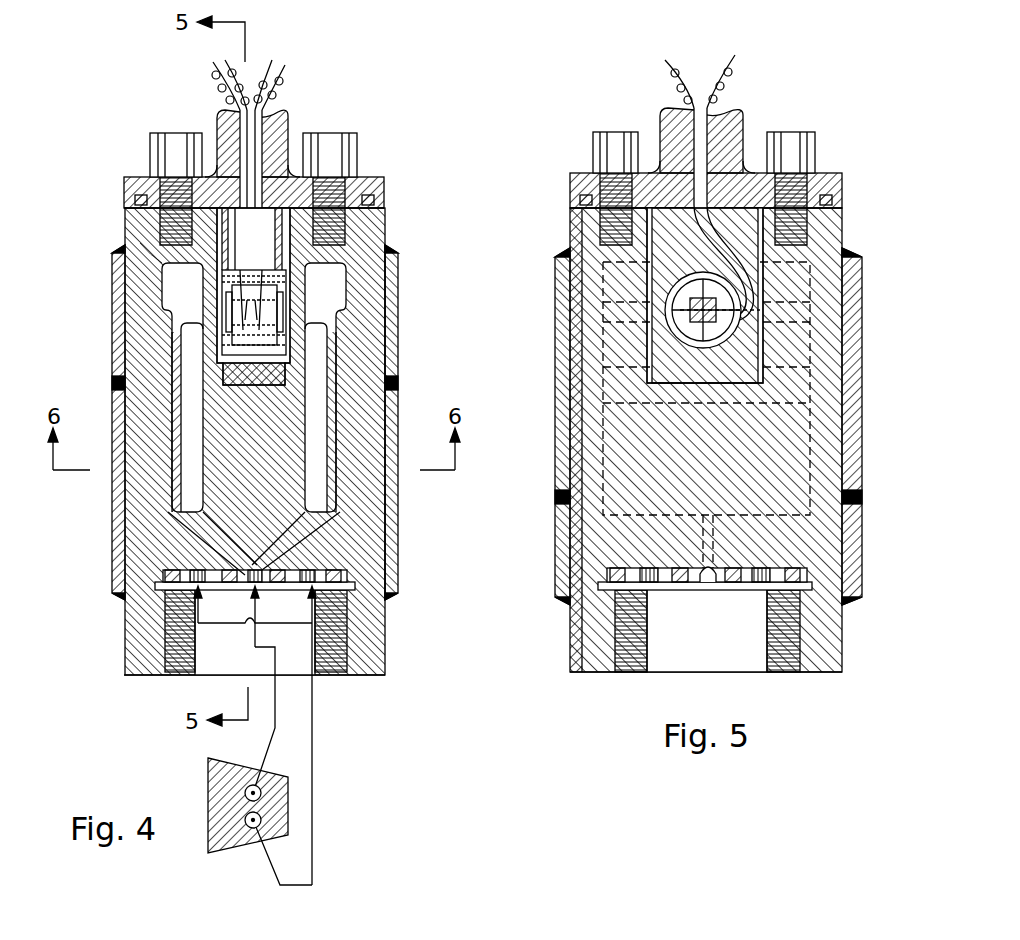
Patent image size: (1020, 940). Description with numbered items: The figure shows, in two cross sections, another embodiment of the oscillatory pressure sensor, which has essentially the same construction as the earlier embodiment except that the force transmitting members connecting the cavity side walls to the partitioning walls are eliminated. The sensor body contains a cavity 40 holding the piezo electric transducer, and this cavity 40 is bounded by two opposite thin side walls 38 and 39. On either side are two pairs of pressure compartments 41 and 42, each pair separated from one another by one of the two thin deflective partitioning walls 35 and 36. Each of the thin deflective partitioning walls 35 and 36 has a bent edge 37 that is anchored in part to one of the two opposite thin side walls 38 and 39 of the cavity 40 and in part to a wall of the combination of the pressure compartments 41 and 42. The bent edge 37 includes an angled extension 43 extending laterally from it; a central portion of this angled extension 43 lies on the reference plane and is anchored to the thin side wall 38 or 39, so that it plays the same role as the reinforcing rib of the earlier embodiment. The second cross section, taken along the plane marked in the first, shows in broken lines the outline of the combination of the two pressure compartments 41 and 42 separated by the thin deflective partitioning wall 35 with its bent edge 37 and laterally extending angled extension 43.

In FIG. 4, the thin deflective partitioning wall 35 is at (170, 463).
In FIG. 5, the thin deflective partitioning wall 35 is at (560, 384).
In FIG. 4, the thin deflective partitioning wall 36 is at (350, 480).
In FIG. 4, the bent edge 37 is at (140, 243).
In FIG. 5, the bent edge 37 is at (835, 335).
In FIG. 4, the thin side wall 38 is at (180, 332).
In FIG. 4, the thin side wall 39 is at (315, 280).
In FIG. 4, the cavity 40 is at (328, 250).
In FIG. 4, the pressure compartment 41 is at (173, 287).
In FIG. 5, the pressure compartment 41 is at (825, 280).
In FIG. 4, the pressure compartment 42 is at (190, 362).
In FIG. 5, the pressure compartment 42 is at (840, 393).
In FIG. 4, the angled extension 43 is at (317, 302).